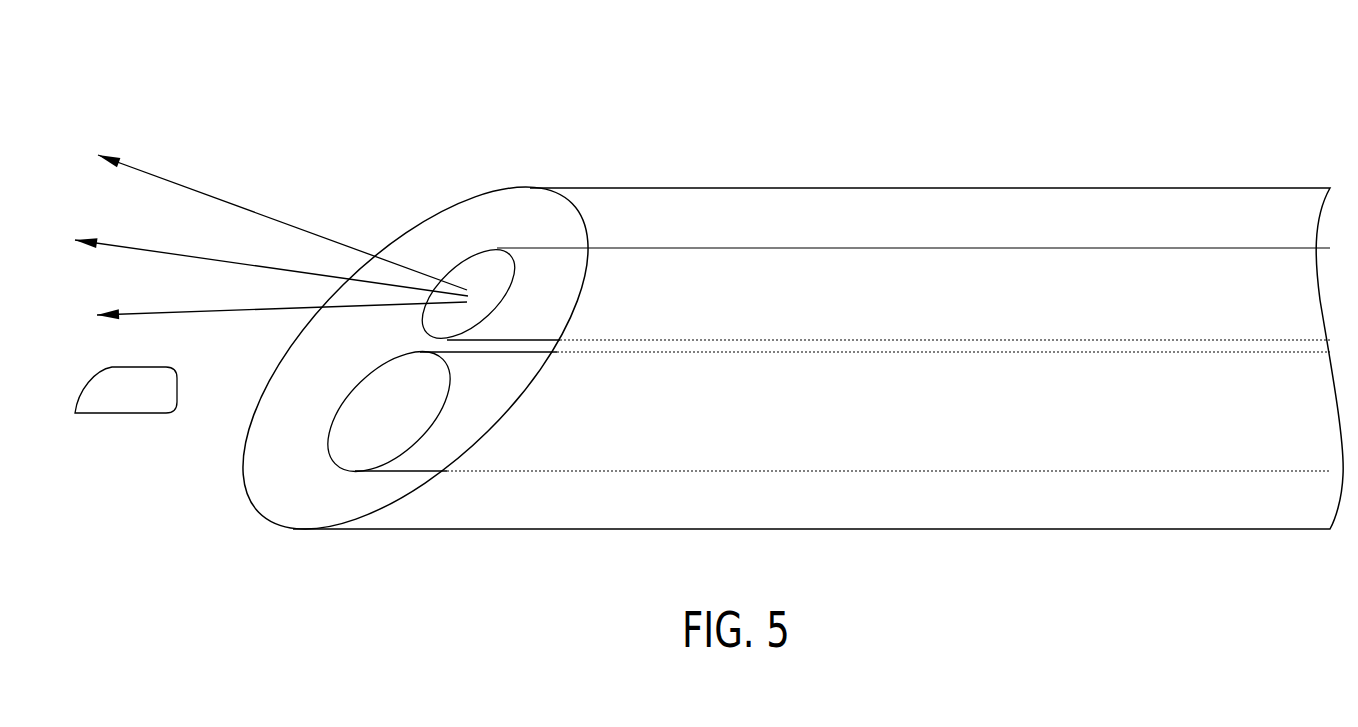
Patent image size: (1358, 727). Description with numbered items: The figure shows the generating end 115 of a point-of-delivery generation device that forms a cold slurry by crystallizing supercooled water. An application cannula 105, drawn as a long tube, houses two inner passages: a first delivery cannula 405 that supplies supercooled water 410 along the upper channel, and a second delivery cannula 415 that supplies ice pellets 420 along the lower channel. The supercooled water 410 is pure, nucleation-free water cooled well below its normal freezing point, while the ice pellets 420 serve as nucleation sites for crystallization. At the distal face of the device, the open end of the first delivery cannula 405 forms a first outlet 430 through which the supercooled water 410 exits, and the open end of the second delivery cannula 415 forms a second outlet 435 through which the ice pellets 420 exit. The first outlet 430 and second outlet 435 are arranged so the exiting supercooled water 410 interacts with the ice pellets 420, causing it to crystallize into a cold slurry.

The application cannula 105 is at (1030, 188).
The generating end 115 is at (658, 128).
The first delivery cannula 405 is at (818, 248).
The supercooled water 410 is at (268, 105).
The second delivery cannula 415 is at (1173, 471).
The ice pellets 420 is at (135, 415).
The first outlet 430 is at (453, 272).
The second outlet 435 is at (352, 473).